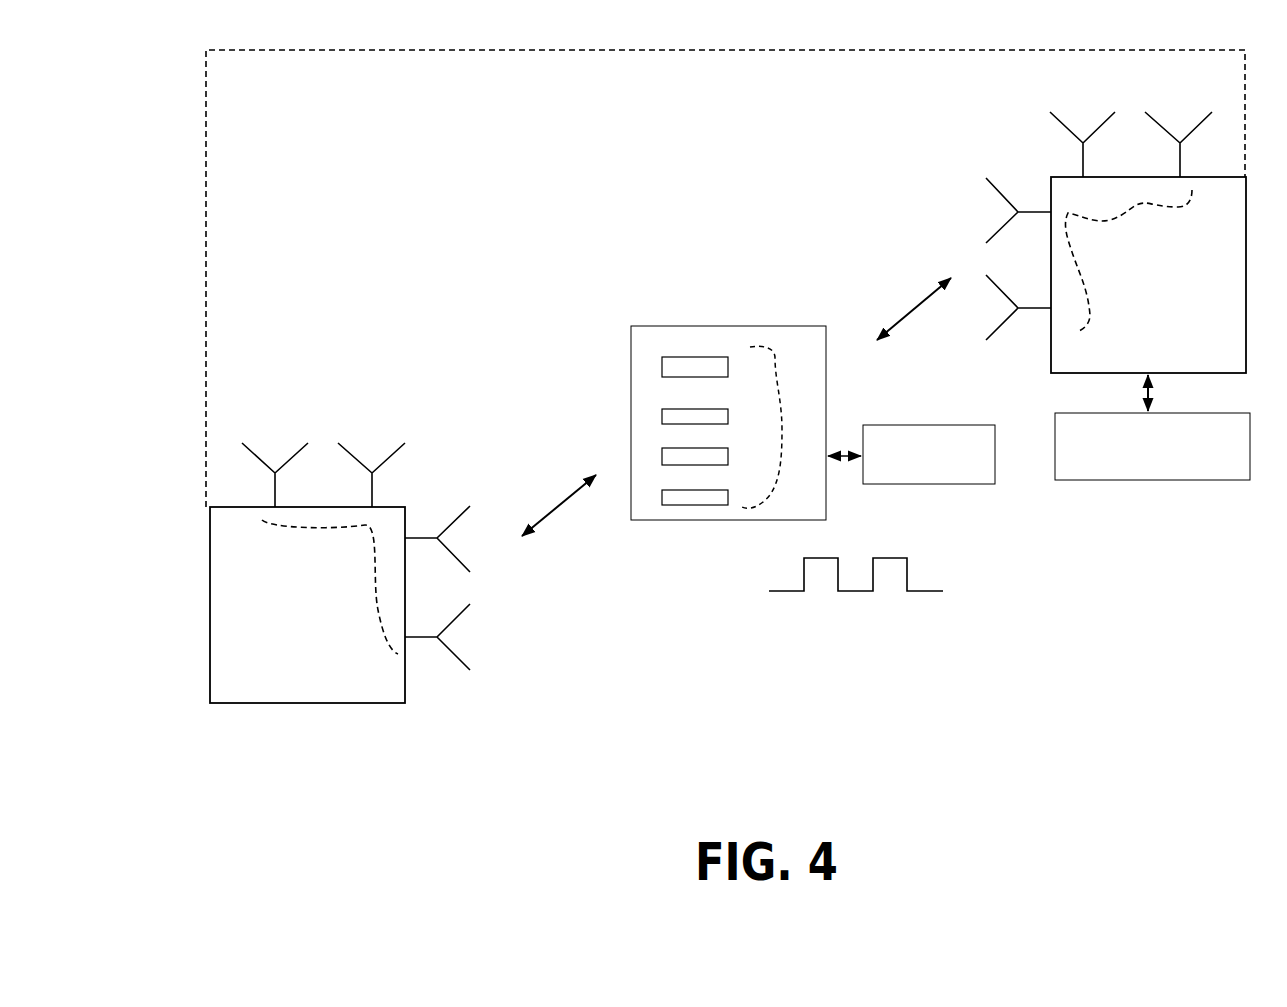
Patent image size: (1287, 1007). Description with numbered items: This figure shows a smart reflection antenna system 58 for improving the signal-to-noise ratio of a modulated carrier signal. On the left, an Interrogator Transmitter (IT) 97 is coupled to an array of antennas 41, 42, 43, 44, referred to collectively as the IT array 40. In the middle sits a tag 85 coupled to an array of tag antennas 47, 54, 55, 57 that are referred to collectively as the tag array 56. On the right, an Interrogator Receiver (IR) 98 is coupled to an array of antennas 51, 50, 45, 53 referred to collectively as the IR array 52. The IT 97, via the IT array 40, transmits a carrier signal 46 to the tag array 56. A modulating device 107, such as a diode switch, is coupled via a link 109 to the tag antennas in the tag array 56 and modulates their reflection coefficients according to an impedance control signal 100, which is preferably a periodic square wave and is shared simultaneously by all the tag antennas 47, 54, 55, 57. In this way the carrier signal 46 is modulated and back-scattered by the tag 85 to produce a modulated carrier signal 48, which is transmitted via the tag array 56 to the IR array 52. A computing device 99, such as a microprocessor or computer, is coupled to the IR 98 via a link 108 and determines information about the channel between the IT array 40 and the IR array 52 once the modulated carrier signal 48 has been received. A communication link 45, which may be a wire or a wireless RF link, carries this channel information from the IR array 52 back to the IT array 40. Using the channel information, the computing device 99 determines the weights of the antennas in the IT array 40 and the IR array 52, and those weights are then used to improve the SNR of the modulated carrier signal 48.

The IT array 40 is at (368, 614).
The antenna 41 is at (492, 640).
The antenna 42 is at (478, 532).
The antenna 43 is at (360, 413).
The antenna 44 is at (268, 417).
The communication link 45 is at (206, 248).
The carrier signal 46 is at (572, 478).
The tag antenna 47 is at (718, 352).
The modulated carrier signal 48 is at (907, 297).
The antenna 50 is at (1083, 107).
The antenna 51 is at (1162, 107).
The IR array 52 is at (1128, 215).
The antenna 53 is at (975, 308).
The tag antenna 54 is at (667, 410).
The tag antenna 55 is at (663, 457).
The tag array 56 is at (778, 385).
The tag antenna 57 is at (697, 508).
The smart reflection antenna system 58 is at (736, 757).
The tag 85 is at (809, 516).
The Interrogator Transmitter (IT) 97 is at (259, 693).
The Interrogator Receiver (IR) 98 is at (1224, 358).
The computing device 99 is at (1183, 487).
The impedance control signal 100 is at (957, 572).
The modulating device 107 is at (922, 495).
The link 108 is at (1162, 392).
The link 109 is at (847, 470).